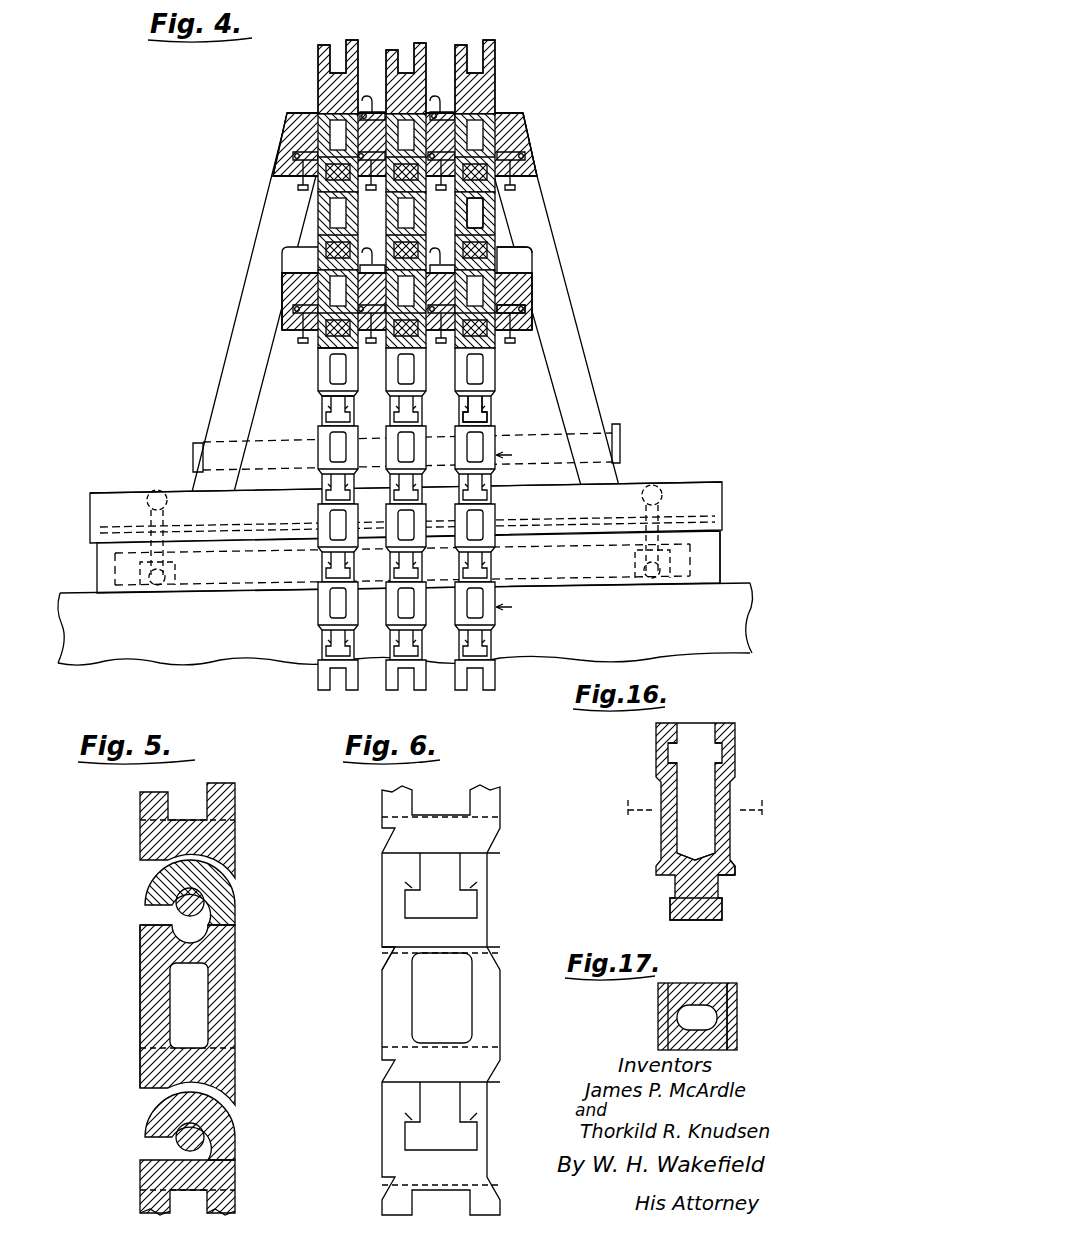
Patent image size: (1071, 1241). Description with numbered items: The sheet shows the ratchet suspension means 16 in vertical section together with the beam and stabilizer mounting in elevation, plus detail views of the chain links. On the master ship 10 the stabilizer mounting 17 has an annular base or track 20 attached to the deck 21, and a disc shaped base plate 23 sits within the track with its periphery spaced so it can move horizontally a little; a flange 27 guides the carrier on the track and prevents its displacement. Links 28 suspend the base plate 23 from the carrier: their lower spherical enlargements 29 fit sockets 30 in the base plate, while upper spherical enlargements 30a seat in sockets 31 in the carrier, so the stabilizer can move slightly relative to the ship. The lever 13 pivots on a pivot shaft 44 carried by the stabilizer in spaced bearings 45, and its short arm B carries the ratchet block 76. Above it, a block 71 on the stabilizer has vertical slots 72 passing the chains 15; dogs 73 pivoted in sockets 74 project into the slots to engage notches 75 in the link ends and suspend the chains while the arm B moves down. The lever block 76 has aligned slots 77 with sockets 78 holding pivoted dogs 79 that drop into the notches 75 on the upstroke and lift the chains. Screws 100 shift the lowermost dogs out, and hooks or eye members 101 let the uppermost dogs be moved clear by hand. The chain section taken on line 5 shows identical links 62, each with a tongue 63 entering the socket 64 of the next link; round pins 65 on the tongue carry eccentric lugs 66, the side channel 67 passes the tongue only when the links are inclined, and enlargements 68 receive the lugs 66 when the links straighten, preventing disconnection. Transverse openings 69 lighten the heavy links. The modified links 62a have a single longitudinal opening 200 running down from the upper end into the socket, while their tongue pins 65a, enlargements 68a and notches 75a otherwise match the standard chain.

In FIG. 4, the master ship 10 is at (118, 656).
In FIG. 4, the lever 13 is at (290, 262).
In FIG. 4, the chains 15 is at (310, 626).
In FIG. 5, the chains 15 is at (134, 1008).
In FIG. 6, the chains 15 is at (376, 1026).
In FIG. 4, the means for controlling movement of the chains 16 is at (545, 122).
In FIG. 4, the stabilizer mounting 17 is at (685, 479).
In FIG. 16, the stabilizer mounting 17 is at (694, 802).
In FIG. 4, the annular base or track 20 is at (710, 552).
In FIG. 4, the deck 21 is at (735, 589).
In FIG. 4, the base plate 23 is at (582, 565).
In FIG. 4, the flange 27 is at (712, 500).
In FIG. 4, the links 28 is at (118, 553).
In FIG. 4, the spherical enlargements 29 is at (153, 590).
In FIG. 4, the sockets 30 is at (168, 590).
In FIG. 4, the spherical enlargements 30a is at (155, 490).
In FIG. 4, the sockets 31 is at (170, 490).
In FIG. 4, the pivot shaft 44 is at (407, 451).
In FIG. 4, the bearings 45 is at (200, 437).
In FIG. 4, the section line 5— 5 is at (513, 529).
In FIG. 4, the links 62 is at (494, 216).
In FIG. 5, the links 62 is at (209, 1015).
In FIG. 6, the links 62 is at (492, 905).
In FIG. 16, the links 62a is at (668, 848).
In FIG. 17, the links 62a is at (680, 1032).
In FIG. 4, the tongue 63 is at (482, 403).
In FIG. 5, the tongue 63 is at (150, 1105).
In FIG. 6, the tongue 63 is at (440, 1103).
In FIG. 5, the socket 64 is at (204, 900).
In FIG. 6, the socket 64 is at (408, 908).
In FIG. 5, the pins 65 is at (175, 1137).
In FIG. 6, the pins 65 is at (422, 1138).
In FIG. 16, the pins 65a is at (720, 912).
In FIG. 5, the eccentric lugs 66 is at (200, 1118).
In FIG. 6, the eccentric lugs 66 is at (405, 885).
In FIG. 5, the channel or passage 67 is at (150, 918).
In FIG. 5, the enlargements 68 is at (205, 880).
In FIG. 16, the enlargements 68a is at (720, 757).
In FIG. 5, the transverse openings 69 is at (189, 1005).
In FIG. 4, the block 71 is at (515, 113).
In FIG. 4, the slots 72 is at (312, 128).
In FIG. 4, the dogs 73 is at (287, 177).
In FIG. 4, the sockets 74 is at (530, 140).
In FIG. 4, the notches 75 is at (320, 392).
In FIG. 6, the notches 75 is at (390, 958).
In FIG. 16, the notches 75a is at (736, 868).
In FIG. 17, the notches 75a is at (740, 1042).
In FIG. 4, the block 76 is at (535, 280).
In FIG. 4, the slots 77 is at (300, 297).
In FIG. 4, the sockets 78 is at (535, 300).
In FIG. 4, the dogs 79 is at (523, 326).
In FIG. 4, the screws 100 is at (515, 184).
In FIG. 4, the hooks or eye members 101 is at (437, 95).
In FIG. 16, the longitudinal opening 200 is at (718, 838).
In FIG. 17, the longitudinal opening 200 is at (722, 1018).
In FIG. 4, the short arm B is at (525, 257).